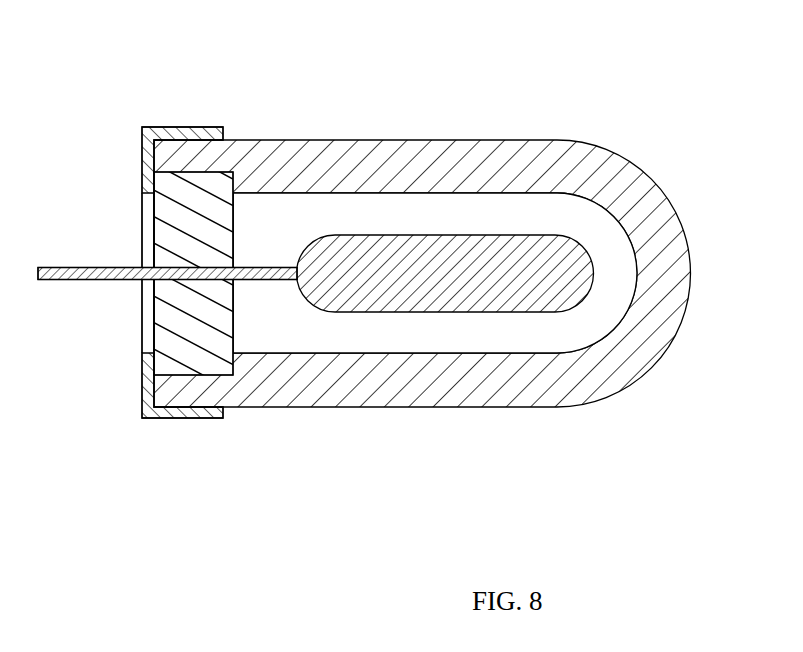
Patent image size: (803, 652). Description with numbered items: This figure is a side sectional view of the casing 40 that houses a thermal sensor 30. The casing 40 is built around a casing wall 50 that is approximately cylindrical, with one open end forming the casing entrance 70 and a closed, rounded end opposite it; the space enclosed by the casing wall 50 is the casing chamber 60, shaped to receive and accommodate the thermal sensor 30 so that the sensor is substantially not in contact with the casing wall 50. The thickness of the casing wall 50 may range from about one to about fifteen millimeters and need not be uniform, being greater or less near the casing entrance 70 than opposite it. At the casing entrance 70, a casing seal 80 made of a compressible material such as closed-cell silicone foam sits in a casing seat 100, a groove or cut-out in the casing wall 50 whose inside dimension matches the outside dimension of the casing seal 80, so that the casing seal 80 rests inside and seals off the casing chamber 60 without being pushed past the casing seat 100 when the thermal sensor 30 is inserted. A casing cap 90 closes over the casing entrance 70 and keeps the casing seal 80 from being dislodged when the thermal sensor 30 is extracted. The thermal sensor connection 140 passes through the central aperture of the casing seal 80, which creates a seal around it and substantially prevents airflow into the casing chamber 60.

The casing 40 is at (155, 77).
The casing wall 50 is at (360, 140).
The casing chamber 60 is at (607, 245).
The casing entrance 70 is at (143, 215).
The casing seal 80 is at (232, 320).
The casing cap 90 is at (190, 417).
The casing seat 100 is at (233, 176).
The thermal sensor connection 140 is at (90, 280).
The thermal sensor 30 is at (493, 313).